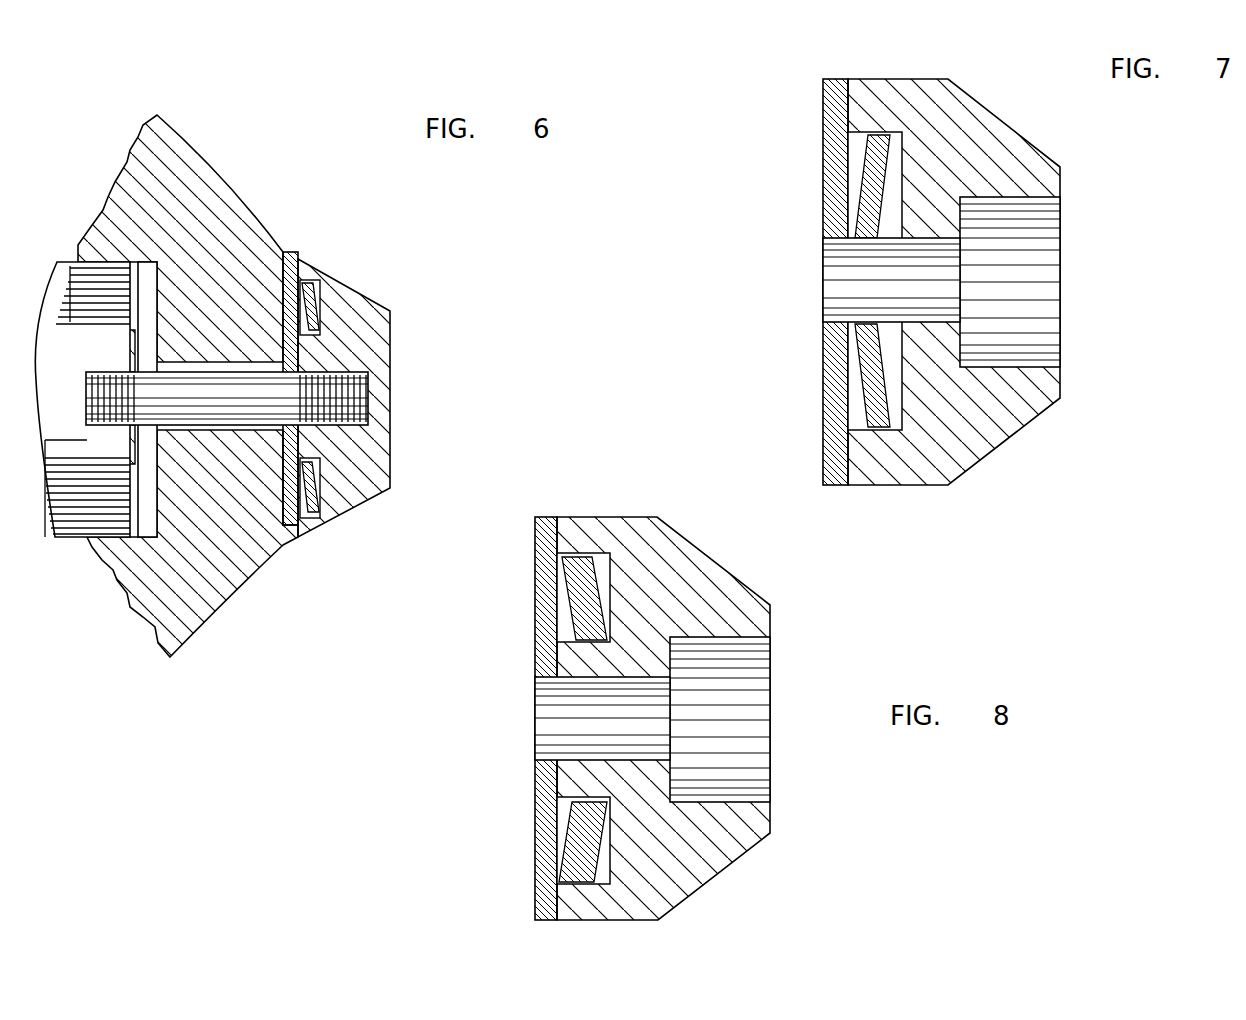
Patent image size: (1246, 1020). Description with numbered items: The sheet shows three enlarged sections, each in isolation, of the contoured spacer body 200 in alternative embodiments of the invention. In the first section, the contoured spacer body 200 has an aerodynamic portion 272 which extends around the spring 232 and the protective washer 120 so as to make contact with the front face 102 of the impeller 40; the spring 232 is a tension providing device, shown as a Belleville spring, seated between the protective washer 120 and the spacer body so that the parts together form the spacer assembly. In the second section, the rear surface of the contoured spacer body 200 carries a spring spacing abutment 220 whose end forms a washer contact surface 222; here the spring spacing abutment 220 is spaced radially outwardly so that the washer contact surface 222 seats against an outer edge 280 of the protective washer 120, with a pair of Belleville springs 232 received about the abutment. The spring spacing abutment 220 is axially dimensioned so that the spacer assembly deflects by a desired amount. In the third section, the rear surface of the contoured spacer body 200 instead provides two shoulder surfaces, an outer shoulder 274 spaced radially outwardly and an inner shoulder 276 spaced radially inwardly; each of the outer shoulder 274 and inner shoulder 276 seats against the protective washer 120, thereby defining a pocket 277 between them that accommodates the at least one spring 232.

In FIG. 6, the impeller 40 is at (127, 200).
In FIG. 6, the front face 102 is at (233, 596).
In FIG. 6, the protective washer 120 is at (322, 492).
In FIG. 7, the protective washer 120 is at (900, 284).
In FIG. 8, the protective washer 120 is at (610, 704).
In FIG. 6, the contoured spacer body 200 is at (320, 353).
In FIG. 6, the spring 232 is at (320, 311).
In FIG. 7, the spring 232 is at (867, 413).
In FIG. 8, the spring 232 is at (555, 871).
In FIG. 6, the aerodynamic portion 272 is at (298, 270).
In FIG. 7, the spring spacing abutment 220 is at (870, 465).
In FIG. 7, the washer contact surface 222 is at (837, 100).
In FIG. 7, the outer edge 280 is at (850, 112).
In FIG. 8, the outer shoulder 274 is at (583, 520).
In FIG. 8, the inner shoulder 276 is at (583, 678).
In FIG. 8, the pocket 277 is at (583, 847).